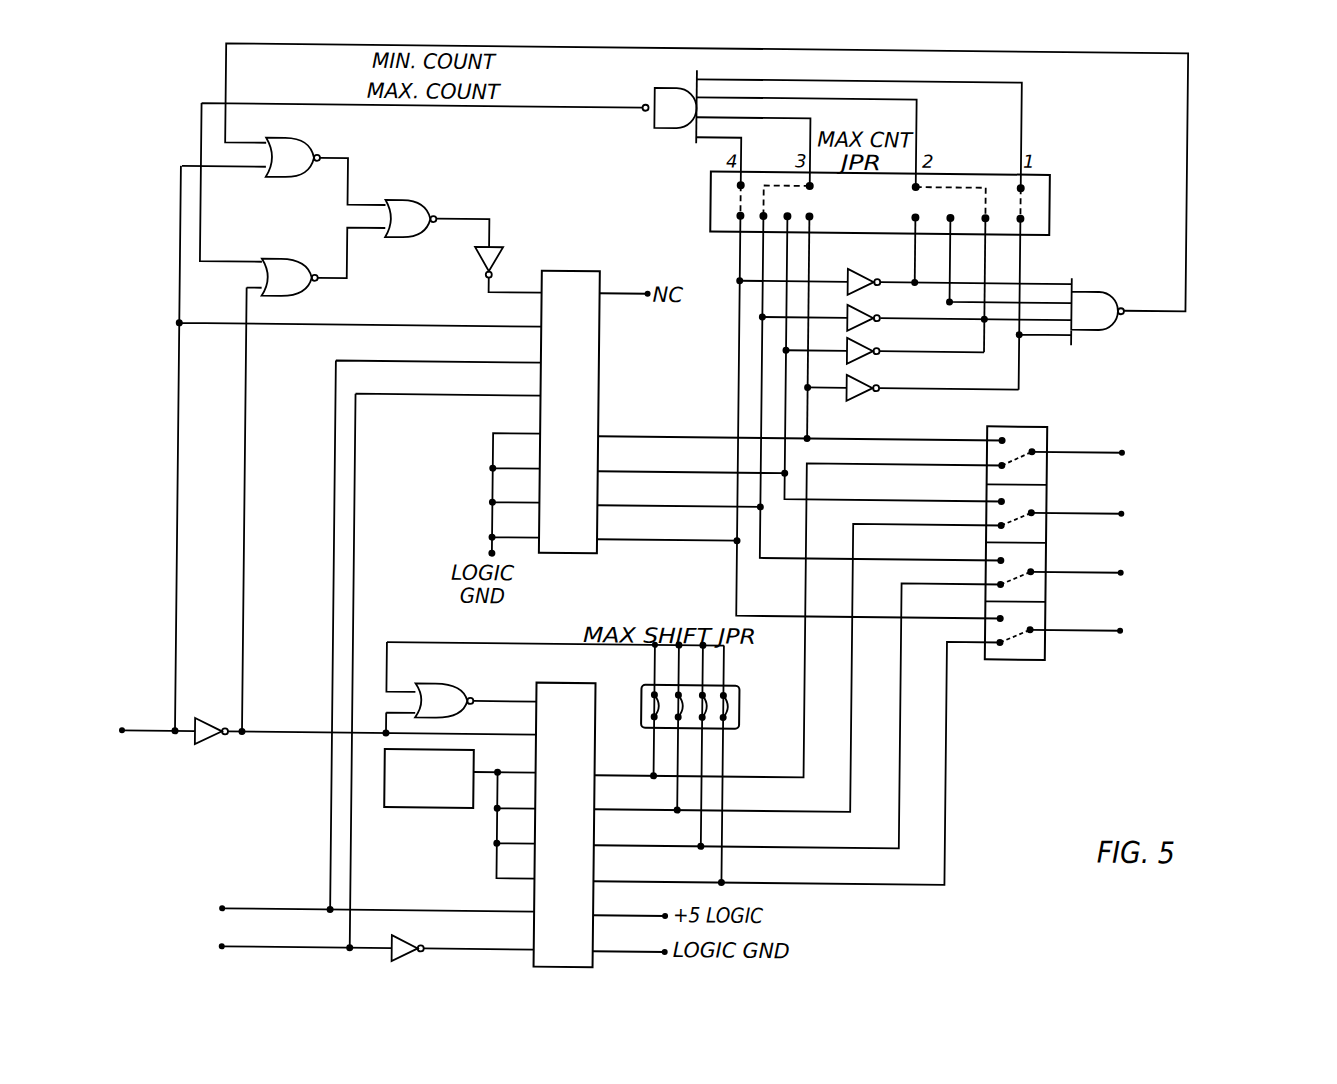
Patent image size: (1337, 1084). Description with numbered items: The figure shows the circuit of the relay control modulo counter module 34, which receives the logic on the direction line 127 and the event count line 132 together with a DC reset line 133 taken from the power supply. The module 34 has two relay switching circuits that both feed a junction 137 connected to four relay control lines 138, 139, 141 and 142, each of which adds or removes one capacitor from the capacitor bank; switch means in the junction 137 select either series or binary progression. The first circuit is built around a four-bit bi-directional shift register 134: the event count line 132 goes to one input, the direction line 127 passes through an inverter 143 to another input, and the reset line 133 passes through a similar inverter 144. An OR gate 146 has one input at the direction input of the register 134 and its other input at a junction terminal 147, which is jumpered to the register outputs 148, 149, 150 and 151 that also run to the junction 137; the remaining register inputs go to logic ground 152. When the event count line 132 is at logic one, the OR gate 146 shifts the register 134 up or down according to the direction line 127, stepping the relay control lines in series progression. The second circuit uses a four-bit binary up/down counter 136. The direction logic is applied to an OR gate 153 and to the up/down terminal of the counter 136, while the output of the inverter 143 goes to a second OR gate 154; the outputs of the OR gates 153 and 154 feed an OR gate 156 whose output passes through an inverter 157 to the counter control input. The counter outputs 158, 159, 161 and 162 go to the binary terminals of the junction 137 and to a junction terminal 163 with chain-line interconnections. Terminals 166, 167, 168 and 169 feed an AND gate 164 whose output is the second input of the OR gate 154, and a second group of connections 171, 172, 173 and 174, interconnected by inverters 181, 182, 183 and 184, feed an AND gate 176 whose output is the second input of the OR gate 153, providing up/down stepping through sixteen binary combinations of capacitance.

The relay control modulo counter module 34 is at (692, 620).
The direction signal line 127 is at (155, 733).
The event count line 132 is at (264, 911).
The DC signal reset line 133 is at (266, 951).
The shift register 134 is at (538, 895).
The binary up/down counter 136 is at (582, 556).
The junction 137 is at (1019, 657).
The relay control line 138 is at (1105, 626).
The relay control line 139 is at (1106, 568).
The relay control line 141 is at (1106, 509).
The relay control line 142 is at (1106, 448).
The inverter 143 is at (212, 745).
The inverter 144 is at (412, 940).
The OR gate 146 is at (441, 688).
The junction terminal 147 is at (742, 706).
The register output 148 is at (634, 881).
The register output 149 is at (630, 845).
The register output 150 is at (627, 809).
The register output 151 is at (621, 775).
The logic ground 152 is at (440, 810).
The OR gate 153 is at (300, 145).
The OR gate 154 is at (281, 263).
The OR gate 156 is at (413, 203).
The inverter 157 is at (503, 259).
The counter output 158 is at (645, 540).
The counter output 159 is at (645, 506).
The counter output 161 is at (648, 472).
The counter output 162 is at (640, 437).
The junction terminal 163 is at (1046, 182).
The AND gate 164 is at (659, 130).
The terminal 166 is at (1019, 123).
The terminal 167 is at (914, 135).
The terminal 168 is at (809, 131).
The terminal 169 is at (738, 156).
The terminal 171 is at (910, 262).
The terminal 172 is at (945, 266).
The terminal 173 is at (982, 320).
The terminal 174 is at (1018, 258).
The AND gate 176 is at (1102, 329).
The inverter 181 is at (870, 296).
The inverter 182 is at (870, 331).
The inverter 183 is at (870, 364).
The inverter 184 is at (870, 401).